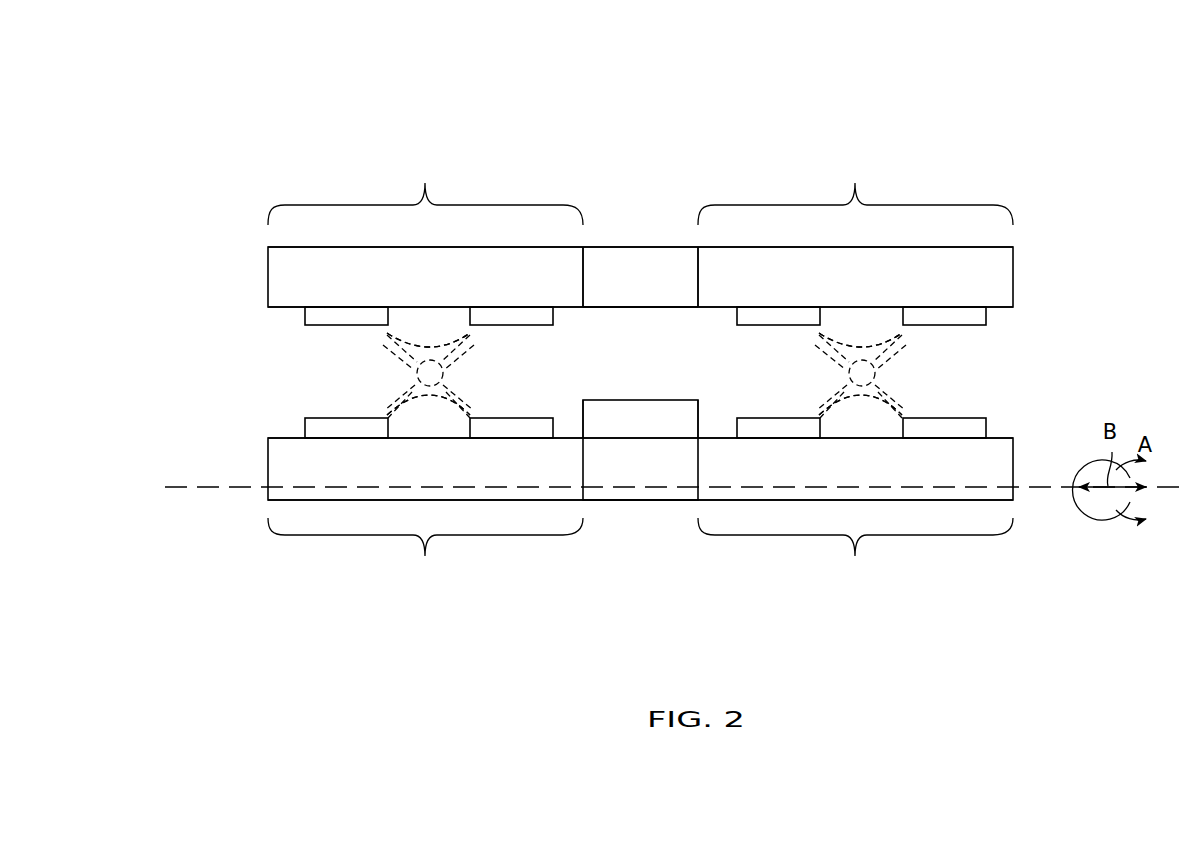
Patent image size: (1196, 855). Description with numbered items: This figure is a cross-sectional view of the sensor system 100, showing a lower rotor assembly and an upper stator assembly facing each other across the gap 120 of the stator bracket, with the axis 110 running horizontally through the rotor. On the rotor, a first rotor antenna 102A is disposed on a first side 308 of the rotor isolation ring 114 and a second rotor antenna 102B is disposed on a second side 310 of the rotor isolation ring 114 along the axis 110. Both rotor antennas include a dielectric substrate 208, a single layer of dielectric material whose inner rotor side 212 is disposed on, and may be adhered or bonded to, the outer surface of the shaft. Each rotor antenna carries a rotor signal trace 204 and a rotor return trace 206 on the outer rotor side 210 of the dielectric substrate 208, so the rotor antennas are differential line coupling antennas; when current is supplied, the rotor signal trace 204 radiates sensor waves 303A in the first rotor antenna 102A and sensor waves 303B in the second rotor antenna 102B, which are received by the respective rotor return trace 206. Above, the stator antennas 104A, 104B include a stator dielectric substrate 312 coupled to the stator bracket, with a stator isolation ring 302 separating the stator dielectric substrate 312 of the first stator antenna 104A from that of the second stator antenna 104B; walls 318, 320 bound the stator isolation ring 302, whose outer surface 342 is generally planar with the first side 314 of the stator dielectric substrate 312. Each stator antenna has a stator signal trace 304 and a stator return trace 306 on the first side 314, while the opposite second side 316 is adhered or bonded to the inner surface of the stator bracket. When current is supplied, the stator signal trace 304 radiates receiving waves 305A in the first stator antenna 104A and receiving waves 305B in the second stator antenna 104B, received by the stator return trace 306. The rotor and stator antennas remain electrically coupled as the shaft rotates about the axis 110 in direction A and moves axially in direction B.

The sensor system 100 is at (1033, 77).
The first rotor antenna 102A is at (855, 552).
The second rotor antenna 102B is at (425, 552).
The first stator antenna 104A is at (855, 190).
The second stator antenna 104B is at (425, 190).
The axis 110 is at (1050, 486).
The rotor isolation ring 114 is at (640, 500).
The gap 120 is at (993, 374).
The rotor signal trace 204 is at (345, 427).
The rotor return trace 206 is at (516, 427).
The dielectric substrate 208 is at (493, 467).
The outer rotor side 210 is at (277, 435).
The inner rotor side 212 is at (277, 503).
The stator isolation ring 302 is at (623, 267).
The sensor waves of the first rotor antenna 303A is at (905, 415).
The sensor waves of the second rotor antenna 303B is at (385, 415).
The stator signal trace 304 is at (345, 318).
The receiving waves of the first stator antenna 305A is at (905, 333).
The receiving waves of the second stator antenna 305B is at (385, 333).
The stator return trace 306 is at (513, 318).
The first side of the rotor isolation ring 308 is at (700, 420).
The second side of the rotor isolation ring 310 is at (583, 420).
The stator dielectric substrate 312 is at (490, 255).
The first side of the stator dielectric substrate 314 is at (277, 311).
The second side of the stator dielectric substrate 316 is at (277, 243).
The side wall of central portion 318 is at (702, 274).
The side wall of central portion 320 is at (580, 274).
The outer surface of the stator isolation ring 342 is at (643, 312).